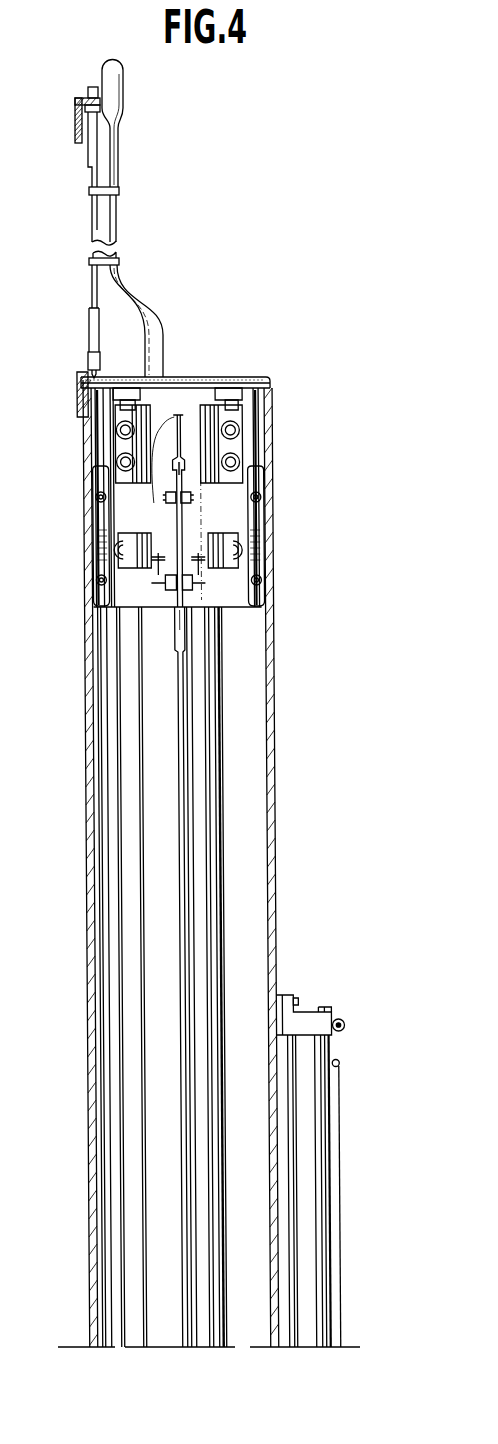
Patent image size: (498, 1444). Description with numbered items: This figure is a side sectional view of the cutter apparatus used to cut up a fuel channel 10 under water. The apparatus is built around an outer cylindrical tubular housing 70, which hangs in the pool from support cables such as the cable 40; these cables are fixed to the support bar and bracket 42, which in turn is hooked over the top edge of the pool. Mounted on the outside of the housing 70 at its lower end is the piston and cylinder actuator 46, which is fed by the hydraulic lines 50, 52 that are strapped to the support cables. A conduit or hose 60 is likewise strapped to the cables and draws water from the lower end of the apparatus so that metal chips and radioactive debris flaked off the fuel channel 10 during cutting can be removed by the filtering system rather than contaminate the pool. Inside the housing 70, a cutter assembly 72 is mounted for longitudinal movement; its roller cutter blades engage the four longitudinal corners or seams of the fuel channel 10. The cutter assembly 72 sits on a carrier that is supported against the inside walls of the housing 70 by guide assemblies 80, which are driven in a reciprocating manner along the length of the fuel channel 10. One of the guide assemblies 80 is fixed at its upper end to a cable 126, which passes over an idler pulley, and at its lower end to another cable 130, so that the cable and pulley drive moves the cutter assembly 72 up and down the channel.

The fuel channel 10 is at (147, 750).
The support cable 40 is at (93, 284).
The bracket 42 is at (75, 133).
The piston and cylinder actuator 46 is at (354, 1155).
The hydraulic line 50 is at (347, 1022).
The hydraulic line 52 is at (340, 1242).
The conduit or hose 60 is at (153, 320).
The outer cylindrical tubular housing 70 is at (273, 743).
The cutter assembly 72 is at (213, 518).
The guide assembly 80 is at (90, 565).
The cable 126 is at (162, 486).
The cable 130 is at (175, 836).